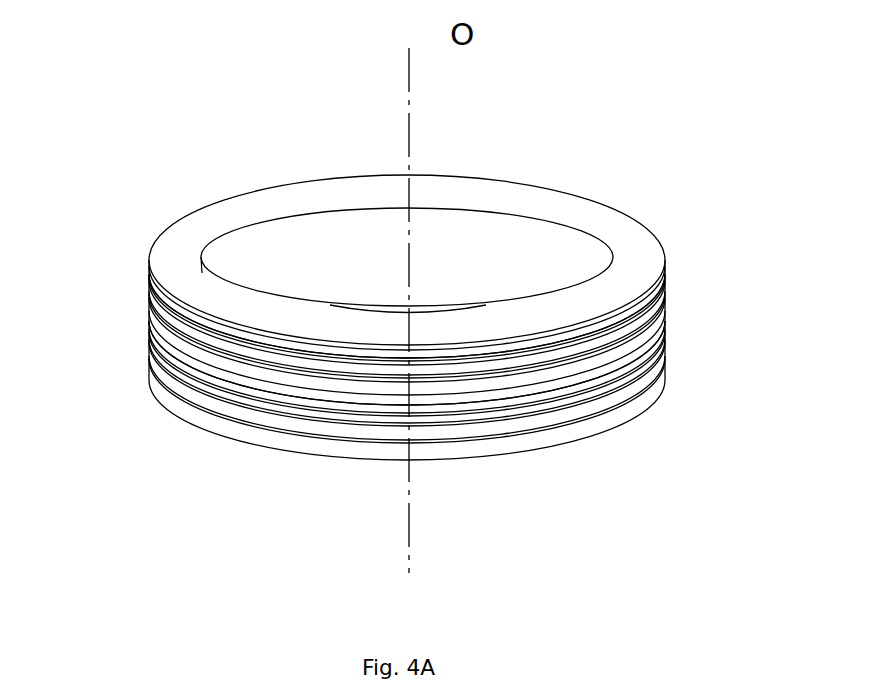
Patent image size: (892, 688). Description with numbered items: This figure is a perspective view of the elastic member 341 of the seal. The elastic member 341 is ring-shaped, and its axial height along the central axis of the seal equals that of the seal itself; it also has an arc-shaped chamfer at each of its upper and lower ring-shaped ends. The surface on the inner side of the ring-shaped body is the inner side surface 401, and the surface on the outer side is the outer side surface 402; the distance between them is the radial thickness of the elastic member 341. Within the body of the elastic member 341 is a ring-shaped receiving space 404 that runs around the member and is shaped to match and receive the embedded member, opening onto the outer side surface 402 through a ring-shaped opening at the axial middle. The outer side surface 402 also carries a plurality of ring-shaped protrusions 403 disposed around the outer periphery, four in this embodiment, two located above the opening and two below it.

The elastic member 341 is at (163, 151).
The inner side surface 401 is at (568, 243).
The outer side surface 402 is at (110, 338).
The protrusion 403 is at (662, 277).
The receiving space 404 is at (665, 320).